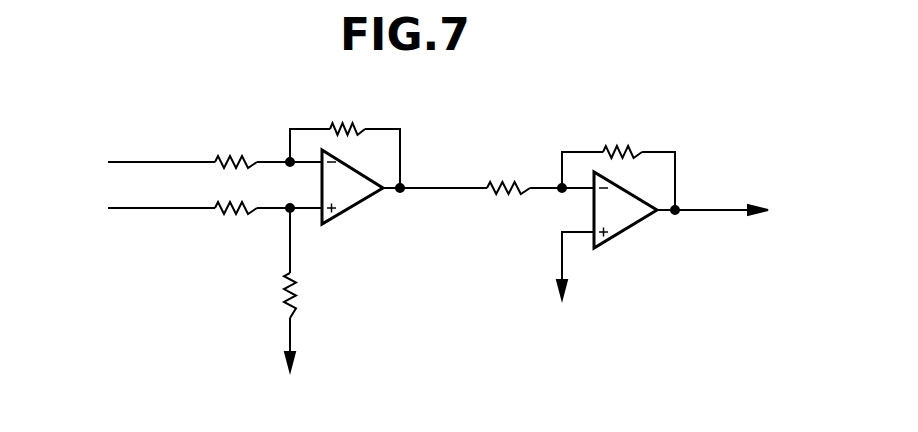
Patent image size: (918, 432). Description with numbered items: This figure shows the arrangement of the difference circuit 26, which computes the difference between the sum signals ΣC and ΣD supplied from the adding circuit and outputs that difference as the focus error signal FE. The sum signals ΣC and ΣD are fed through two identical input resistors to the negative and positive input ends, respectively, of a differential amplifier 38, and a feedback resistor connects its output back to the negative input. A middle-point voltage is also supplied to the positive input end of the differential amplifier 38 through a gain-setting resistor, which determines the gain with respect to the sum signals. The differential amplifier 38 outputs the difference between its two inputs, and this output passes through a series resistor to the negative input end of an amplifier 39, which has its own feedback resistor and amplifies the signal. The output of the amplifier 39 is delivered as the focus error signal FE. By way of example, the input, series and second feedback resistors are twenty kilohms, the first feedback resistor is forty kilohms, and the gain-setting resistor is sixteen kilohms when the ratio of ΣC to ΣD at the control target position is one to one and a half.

The difference circuit 26 is at (456, 124).
The differential amplifier 38 is at (360, 205).
The amplifier 39 is at (622, 232).